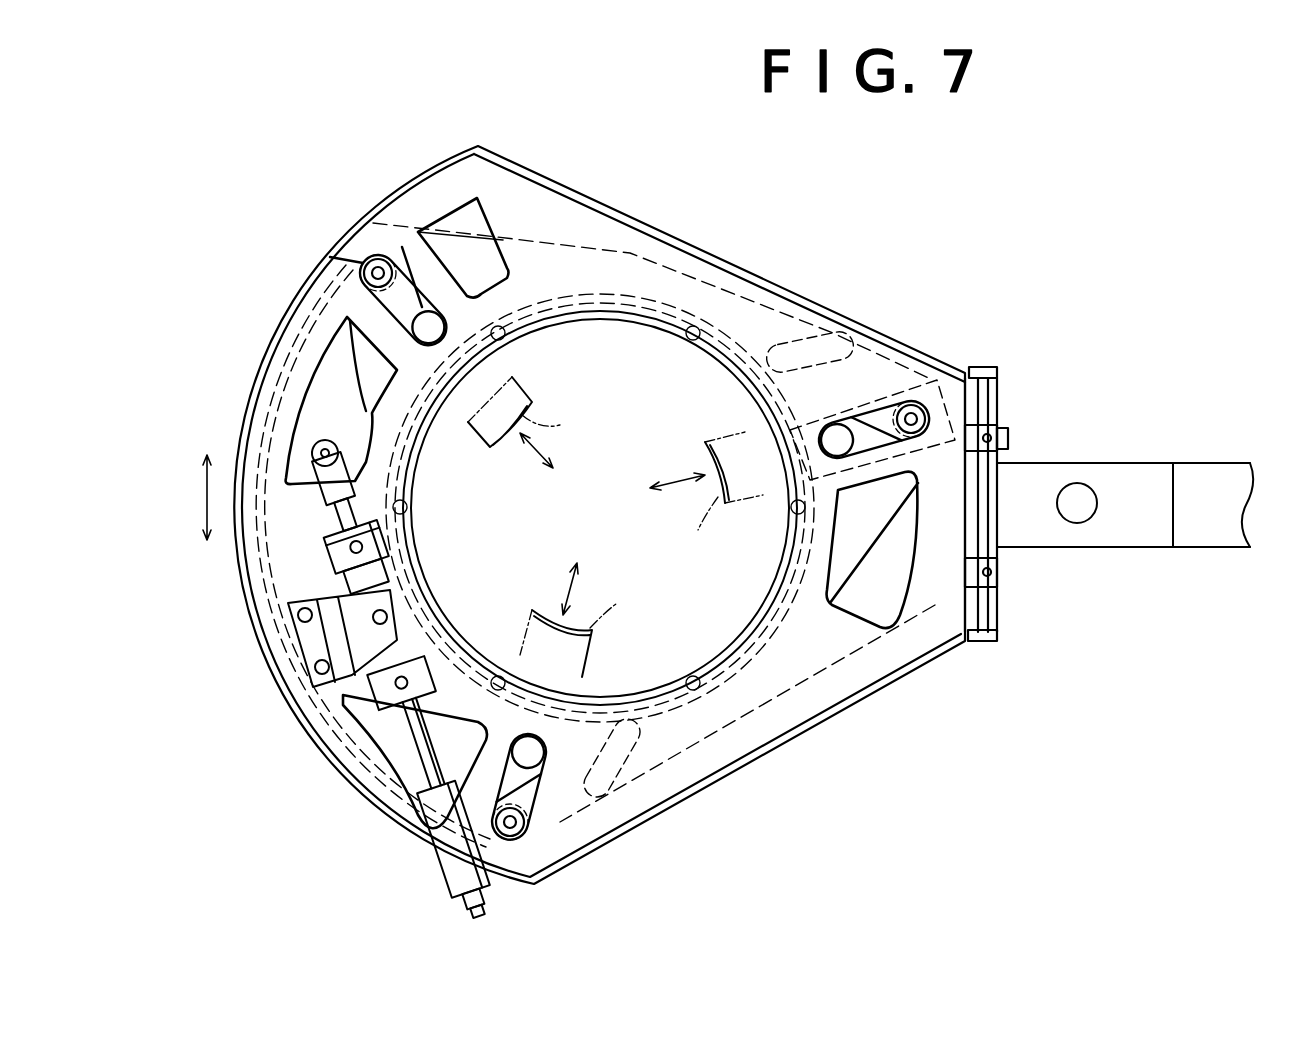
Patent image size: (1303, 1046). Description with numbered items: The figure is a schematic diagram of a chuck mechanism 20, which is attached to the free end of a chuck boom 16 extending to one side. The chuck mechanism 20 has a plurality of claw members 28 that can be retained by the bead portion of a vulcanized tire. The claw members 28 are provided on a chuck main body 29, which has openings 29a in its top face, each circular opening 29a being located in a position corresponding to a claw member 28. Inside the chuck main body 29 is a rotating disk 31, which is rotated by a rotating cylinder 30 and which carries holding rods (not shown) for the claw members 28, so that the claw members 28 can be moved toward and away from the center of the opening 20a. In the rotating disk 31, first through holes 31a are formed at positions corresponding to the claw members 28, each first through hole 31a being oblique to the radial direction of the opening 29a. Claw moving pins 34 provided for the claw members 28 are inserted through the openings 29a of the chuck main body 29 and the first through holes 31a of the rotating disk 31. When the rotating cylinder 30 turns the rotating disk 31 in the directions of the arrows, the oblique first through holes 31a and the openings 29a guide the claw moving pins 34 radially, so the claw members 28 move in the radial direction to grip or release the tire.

The chuck boom 16 is at (1117, 463).
The chuck mechanism 20 is at (752, 256).
The circular opening 20a is at (613, 320).
The claw member 28 is at (615, 527).
The chuck main body 29 is at (523, 187).
The opening 29a is at (407, 290).
The rotating cylinder 30 is at (345, 578).
The rotating disk 31 is at (318, 368).
The first through hole 31a is at (363, 370).
The claw moving pin 34 is at (373, 262).